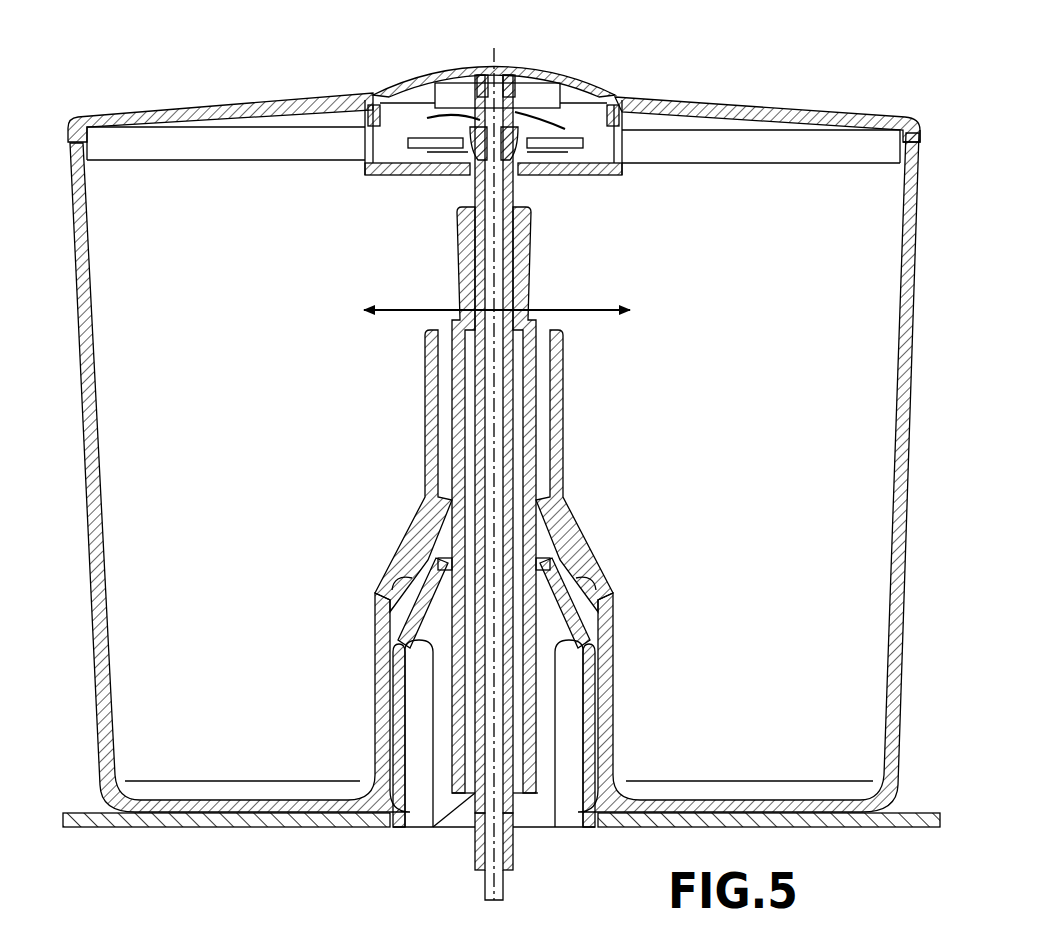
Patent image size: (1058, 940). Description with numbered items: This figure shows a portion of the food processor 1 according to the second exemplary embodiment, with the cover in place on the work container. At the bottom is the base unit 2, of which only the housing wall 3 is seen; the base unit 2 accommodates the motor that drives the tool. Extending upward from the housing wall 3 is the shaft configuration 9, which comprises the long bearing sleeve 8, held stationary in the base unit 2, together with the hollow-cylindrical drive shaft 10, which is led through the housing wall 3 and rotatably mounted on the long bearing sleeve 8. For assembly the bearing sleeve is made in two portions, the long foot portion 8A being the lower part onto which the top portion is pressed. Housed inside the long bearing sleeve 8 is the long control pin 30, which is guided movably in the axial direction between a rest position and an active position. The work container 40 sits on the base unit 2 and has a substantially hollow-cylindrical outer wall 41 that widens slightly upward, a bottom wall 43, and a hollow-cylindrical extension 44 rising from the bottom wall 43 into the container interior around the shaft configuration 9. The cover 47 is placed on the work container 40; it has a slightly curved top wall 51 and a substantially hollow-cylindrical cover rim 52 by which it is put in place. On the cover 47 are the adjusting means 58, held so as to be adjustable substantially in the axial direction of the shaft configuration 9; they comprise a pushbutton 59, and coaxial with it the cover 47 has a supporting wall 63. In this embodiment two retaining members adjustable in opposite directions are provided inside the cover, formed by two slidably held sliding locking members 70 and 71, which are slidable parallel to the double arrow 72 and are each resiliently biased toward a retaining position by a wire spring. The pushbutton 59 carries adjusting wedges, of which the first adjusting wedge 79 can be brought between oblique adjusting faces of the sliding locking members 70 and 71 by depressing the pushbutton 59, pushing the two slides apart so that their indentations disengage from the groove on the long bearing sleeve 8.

The food processor 1 is at (832, 76).
The base unit 2 is at (284, 838).
The housing wall 3 is at (878, 830).
The long bearing sleeve 8 is at (460, 186).
The foot portion 8A is at (513, 848).
The shaft configuration 9 is at (545, 213).
The drive shaft 10 is at (468, 235).
The long control pin 30 is at (497, 888).
The work container 40 is at (905, 664).
The outer wall 41 is at (897, 571).
The bottom wall 43 is at (231, 800).
The hollow-cylindrical extension 44 is at (557, 420).
The cover 47 is at (193, 96).
The top wall 51 is at (738, 101).
The cover rim 52 is at (923, 133).
The adjusting means 58 is at (405, 72).
The pushbutton 59 is at (480, 72).
The supporting wall 63 is at (499, 80).
The sliding locking member 70 is at (400, 172).
The sliding locking member 71 is at (586, 172).
The double arrow 72 is at (582, 305).
The adjusting wedge 79 is at (518, 110).